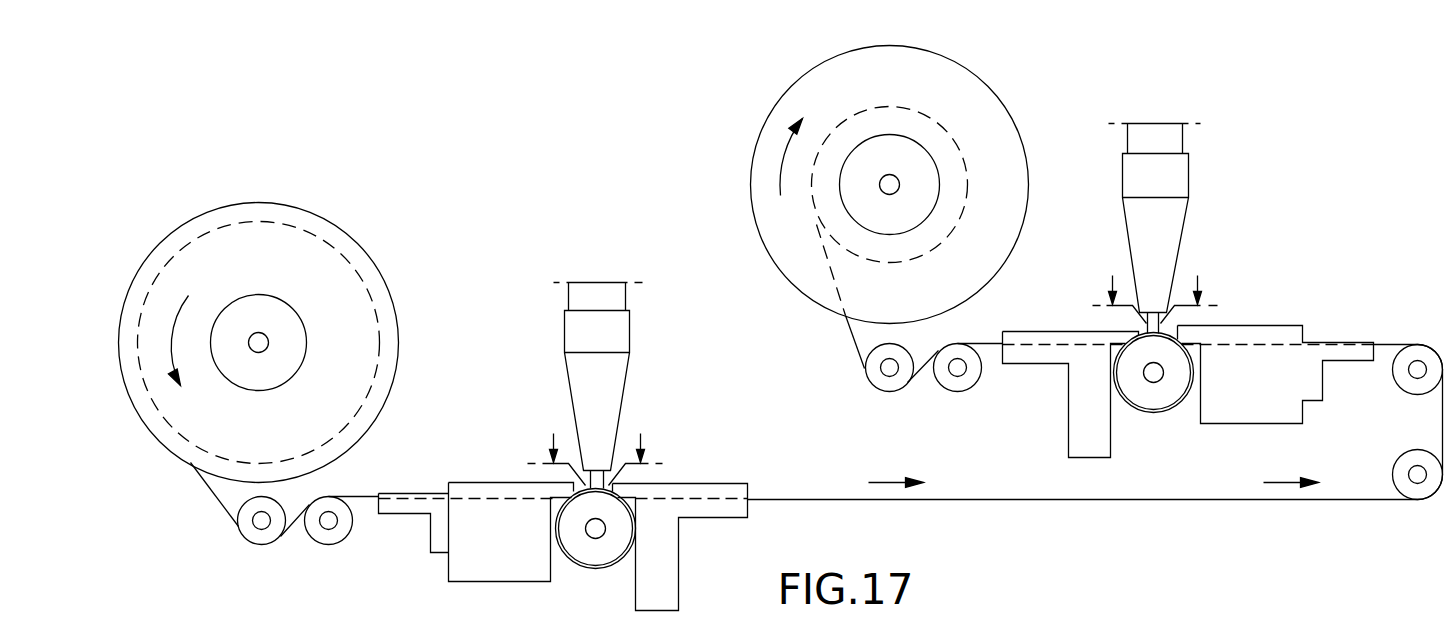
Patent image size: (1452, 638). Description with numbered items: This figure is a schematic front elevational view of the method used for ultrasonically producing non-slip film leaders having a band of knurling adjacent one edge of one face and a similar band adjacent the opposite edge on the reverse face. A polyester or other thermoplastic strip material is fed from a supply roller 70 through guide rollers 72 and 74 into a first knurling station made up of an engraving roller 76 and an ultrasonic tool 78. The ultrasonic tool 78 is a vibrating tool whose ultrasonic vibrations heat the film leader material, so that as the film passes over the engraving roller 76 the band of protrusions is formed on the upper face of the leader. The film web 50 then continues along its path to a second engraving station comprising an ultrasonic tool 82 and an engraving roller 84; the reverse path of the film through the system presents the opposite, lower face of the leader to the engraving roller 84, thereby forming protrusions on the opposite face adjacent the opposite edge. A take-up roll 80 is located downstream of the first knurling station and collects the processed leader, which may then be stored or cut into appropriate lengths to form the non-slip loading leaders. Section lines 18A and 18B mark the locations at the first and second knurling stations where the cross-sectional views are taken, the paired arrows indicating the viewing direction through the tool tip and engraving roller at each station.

The web 50 is at (1014, 522).
The supply roller 70 is at (343, 247).
The guide roller 72 is at (270, 535).
The guide roller 74 is at (340, 533).
The engraving roller 76 is at (598, 555).
The ultrasonic tool 78 is at (615, 387).
The take-up roll 80 is at (807, 85).
The ultrasonic tool 82 is at (1172, 210).
The engraving roller 84 is at (1153, 398).
The section line 18A is at (595, 444).
The section line 18B is at (1151, 282).